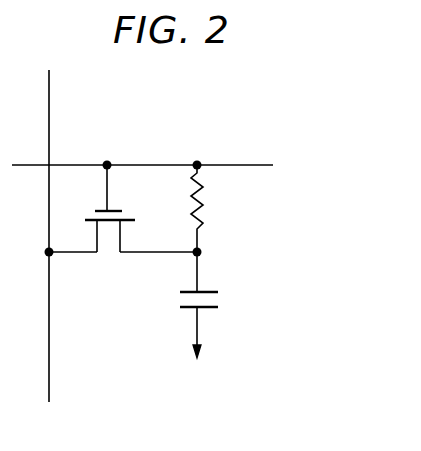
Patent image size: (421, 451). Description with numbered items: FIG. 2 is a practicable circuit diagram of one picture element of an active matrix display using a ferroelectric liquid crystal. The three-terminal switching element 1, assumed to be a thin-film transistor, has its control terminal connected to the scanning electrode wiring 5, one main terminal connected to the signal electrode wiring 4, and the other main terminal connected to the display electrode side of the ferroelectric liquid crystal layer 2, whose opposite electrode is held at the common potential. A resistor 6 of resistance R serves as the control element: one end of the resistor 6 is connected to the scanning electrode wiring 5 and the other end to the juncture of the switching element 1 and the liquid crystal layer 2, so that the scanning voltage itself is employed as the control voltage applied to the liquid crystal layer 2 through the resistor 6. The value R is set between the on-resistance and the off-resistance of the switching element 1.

The three-terminal switching element 1 is at (89, 216).
The ferroelectric liquid crystal layer 2 is at (221, 299).
The signal electrode wiring 4 is at (50, 127).
The scanning electrode wiring 5 is at (152, 164).
The resistor 6 is at (204, 206).